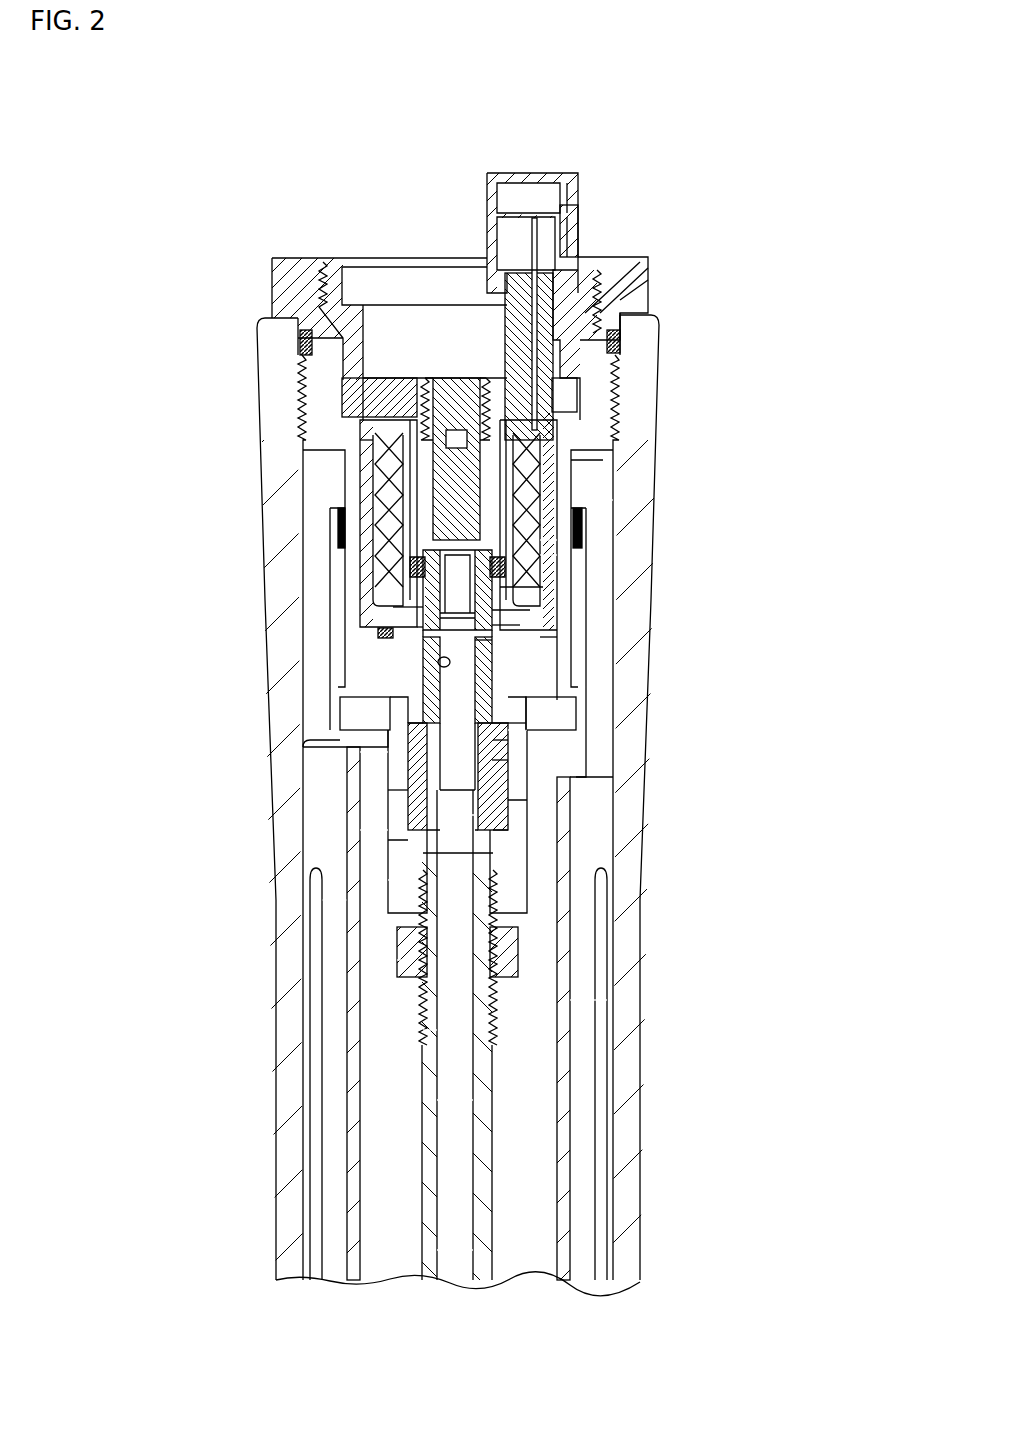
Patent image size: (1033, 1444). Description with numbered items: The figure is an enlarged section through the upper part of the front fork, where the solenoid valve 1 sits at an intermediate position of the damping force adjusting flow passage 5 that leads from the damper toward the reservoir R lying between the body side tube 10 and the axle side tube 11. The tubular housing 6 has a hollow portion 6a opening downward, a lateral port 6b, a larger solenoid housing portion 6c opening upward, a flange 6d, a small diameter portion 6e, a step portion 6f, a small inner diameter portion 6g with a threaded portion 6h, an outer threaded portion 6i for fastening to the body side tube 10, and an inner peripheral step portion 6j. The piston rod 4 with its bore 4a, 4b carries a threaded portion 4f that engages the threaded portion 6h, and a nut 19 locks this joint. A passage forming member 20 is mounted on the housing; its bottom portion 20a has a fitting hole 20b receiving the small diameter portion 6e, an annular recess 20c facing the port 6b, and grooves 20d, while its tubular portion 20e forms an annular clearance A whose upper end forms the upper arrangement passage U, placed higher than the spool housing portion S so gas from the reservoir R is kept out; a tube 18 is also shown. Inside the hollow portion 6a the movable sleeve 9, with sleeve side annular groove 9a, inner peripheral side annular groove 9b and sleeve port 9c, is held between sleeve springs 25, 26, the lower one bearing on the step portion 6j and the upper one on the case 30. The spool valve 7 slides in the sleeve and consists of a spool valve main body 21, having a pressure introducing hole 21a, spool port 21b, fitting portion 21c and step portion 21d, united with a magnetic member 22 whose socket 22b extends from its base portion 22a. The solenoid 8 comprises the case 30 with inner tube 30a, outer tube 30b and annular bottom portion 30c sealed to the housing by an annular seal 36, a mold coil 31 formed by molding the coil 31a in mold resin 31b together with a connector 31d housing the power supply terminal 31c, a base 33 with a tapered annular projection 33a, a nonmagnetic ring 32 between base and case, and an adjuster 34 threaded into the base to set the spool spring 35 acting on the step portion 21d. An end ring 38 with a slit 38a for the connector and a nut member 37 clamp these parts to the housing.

The solenoid valve 1 is at (410, 832).
The piston rod 4 is at (492, 1172).
The rod bore 4a is at (494, 1130).
The rod bore end 4b is at (472, 1258).
The threaded portion 4f is at (496, 1030).
The damping force adjusting flow passage 5 is at (447, 1228).
The housing 6 is at (625, 922).
The hollow portion 6a is at (522, 700).
The port 6b is at (545, 772).
The solenoid housing portion 6c is at (605, 500).
The flange 6d is at (635, 292).
The small diameter portion 6e is at (527, 895).
The step portion 6f is at (300, 762).
The small inner diameter portion 6g is at (390, 900).
The threaded portion 6h is at (398, 960).
The threaded portion 6i is at (595, 488).
The inner peripheral step portion 6j is at (520, 960).
The spool valve 7 is at (400, 607).
The solenoid 8 is at (408, 378).
The movable sleeve 9 is at (375, 746).
The sleeve side annular groove 9a is at (380, 752).
The inner peripheral side annular groove 9b is at (390, 790).
The sleeve port 9c is at (510, 800).
The body side tube 10 is at (300, 1150).
The axle side tube 11 is at (290, 1222).
The tube 18 is at (572, 1075).
The nut 19 is at (598, 1000).
The passage forming member 20 is at (430, 760).
The bottom portion 20a is at (500, 760).
The fitting hole 20b is at (505, 830).
The annular recess 20c is at (510, 720).
The grooves 20d is at (500, 742).
The tubular portion 20e is at (518, 625).
The spool valve main body 21 is at (505, 692).
The pressure introducing hole 21a is at (400, 712).
The spool port 21b is at (512, 732).
The fitting portion 21c is at (552, 637).
The step portion 21d is at (420, 686).
The magnetic member 22 is at (494, 560).
The base portion 22a is at (412, 568).
The socket 22b is at (425, 603).
The sleeve spring 25 is at (482, 815).
The sleeve spring 26 is at (494, 640).
The case 30 is at (560, 482).
The inner tube 30a is at (545, 522).
The outer tube 30b is at (535, 470).
The annular bottom portion 30c is at (420, 640).
The mold coil 31 is at (385, 470).
The coil 31a is at (345, 480).
The mold resin 31b is at (370, 440).
The power supply terminal 31c is at (538, 215).
The connector 31d is at (573, 217).
The nonmagnetic ring 32 is at (378, 632).
The base 33 is at (424, 378).
The annular projection 33a is at (336, 528).
The adjuster 34 is at (449, 430).
The spool spring 35 is at (376, 512).
The annular seal 36 is at (330, 652).
The nut member 37 is at (335, 280).
The end ring 38 is at (370, 378).
The slit 38a is at (578, 395).
The annular clearance A is at (528, 612).
The spool housing portion S is at (560, 540).
The upper arrangement passage U is at (560, 555).
The reservoir R is at (330, 1090).